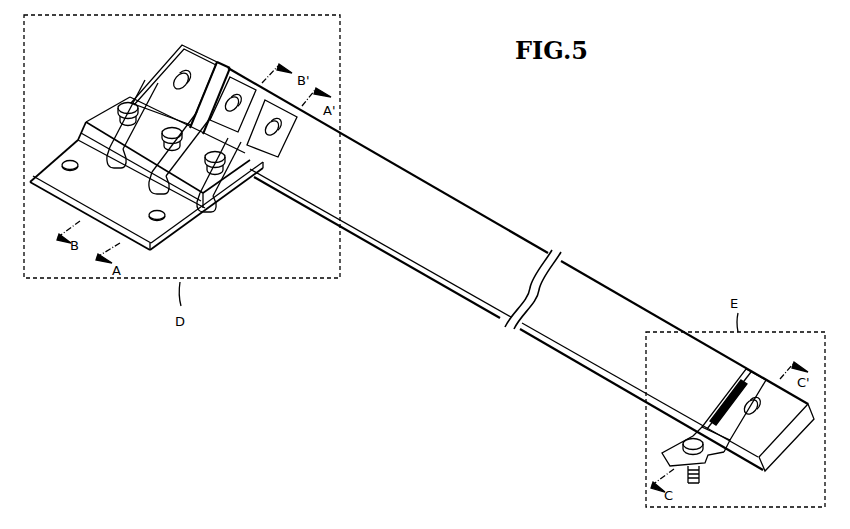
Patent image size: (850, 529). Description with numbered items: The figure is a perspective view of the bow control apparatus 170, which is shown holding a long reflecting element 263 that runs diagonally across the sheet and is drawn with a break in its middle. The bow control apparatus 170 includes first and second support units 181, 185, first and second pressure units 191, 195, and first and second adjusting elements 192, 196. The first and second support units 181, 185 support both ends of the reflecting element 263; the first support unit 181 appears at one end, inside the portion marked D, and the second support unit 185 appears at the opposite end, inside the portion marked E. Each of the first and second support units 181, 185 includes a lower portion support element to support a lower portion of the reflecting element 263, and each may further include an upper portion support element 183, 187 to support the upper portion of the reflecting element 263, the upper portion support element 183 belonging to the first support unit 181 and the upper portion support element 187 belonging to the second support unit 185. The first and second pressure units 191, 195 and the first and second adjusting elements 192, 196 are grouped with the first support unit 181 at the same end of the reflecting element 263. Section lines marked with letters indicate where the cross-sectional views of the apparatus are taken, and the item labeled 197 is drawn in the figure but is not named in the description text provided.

The bow control apparatus 170 is at (521, 269).
The reflecting element 263 is at (497, 236).
The first support unit 181 is at (196, 119).
The upper portion support element 183 is at (249, 80).
The second support unit 185 is at (742, 413).
The upper portion support element 187 is at (774, 375).
The first pressure unit 191 is at (290, 143).
The first adjusting element 192 is at (228, 168).
The second pressure unit 195 is at (161, 66).
The second adjusting element 196 is at (122, 102).
The base bracket 197 is at (103, 125).